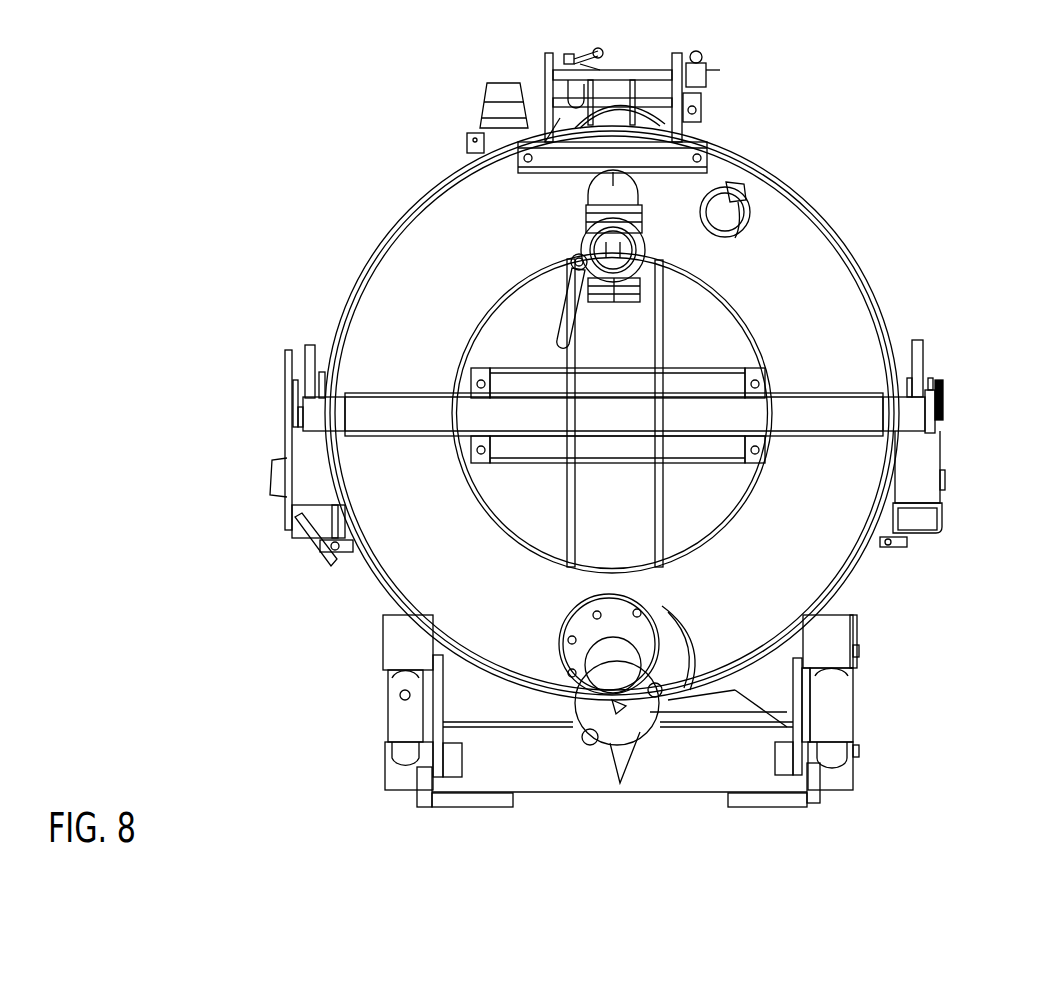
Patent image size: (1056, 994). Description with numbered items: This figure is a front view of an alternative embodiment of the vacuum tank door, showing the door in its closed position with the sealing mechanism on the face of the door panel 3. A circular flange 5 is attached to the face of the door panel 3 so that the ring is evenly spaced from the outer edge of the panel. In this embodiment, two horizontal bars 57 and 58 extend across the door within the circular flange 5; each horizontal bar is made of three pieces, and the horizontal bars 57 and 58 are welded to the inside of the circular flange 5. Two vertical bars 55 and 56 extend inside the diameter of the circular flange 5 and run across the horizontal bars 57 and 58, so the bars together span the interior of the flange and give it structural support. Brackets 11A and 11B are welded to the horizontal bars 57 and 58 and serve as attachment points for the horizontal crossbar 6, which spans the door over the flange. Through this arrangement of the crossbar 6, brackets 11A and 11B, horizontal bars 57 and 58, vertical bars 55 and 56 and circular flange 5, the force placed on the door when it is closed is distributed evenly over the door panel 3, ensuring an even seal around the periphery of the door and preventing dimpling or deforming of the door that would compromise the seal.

The door panel 3 is at (574, 413).
The circular flange 5 is at (673, 361).
The horizontal crossbar 6 is at (660, 465).
The vertical bar 55 is at (754, 398).
The vertical bar 56 is at (424, 288).
The horizontal bar 57 is at (738, 528).
The horizontal bar 58 is at (730, 339).
The bracket 11A is at (859, 387).
The bracket 11B is at (332, 468).